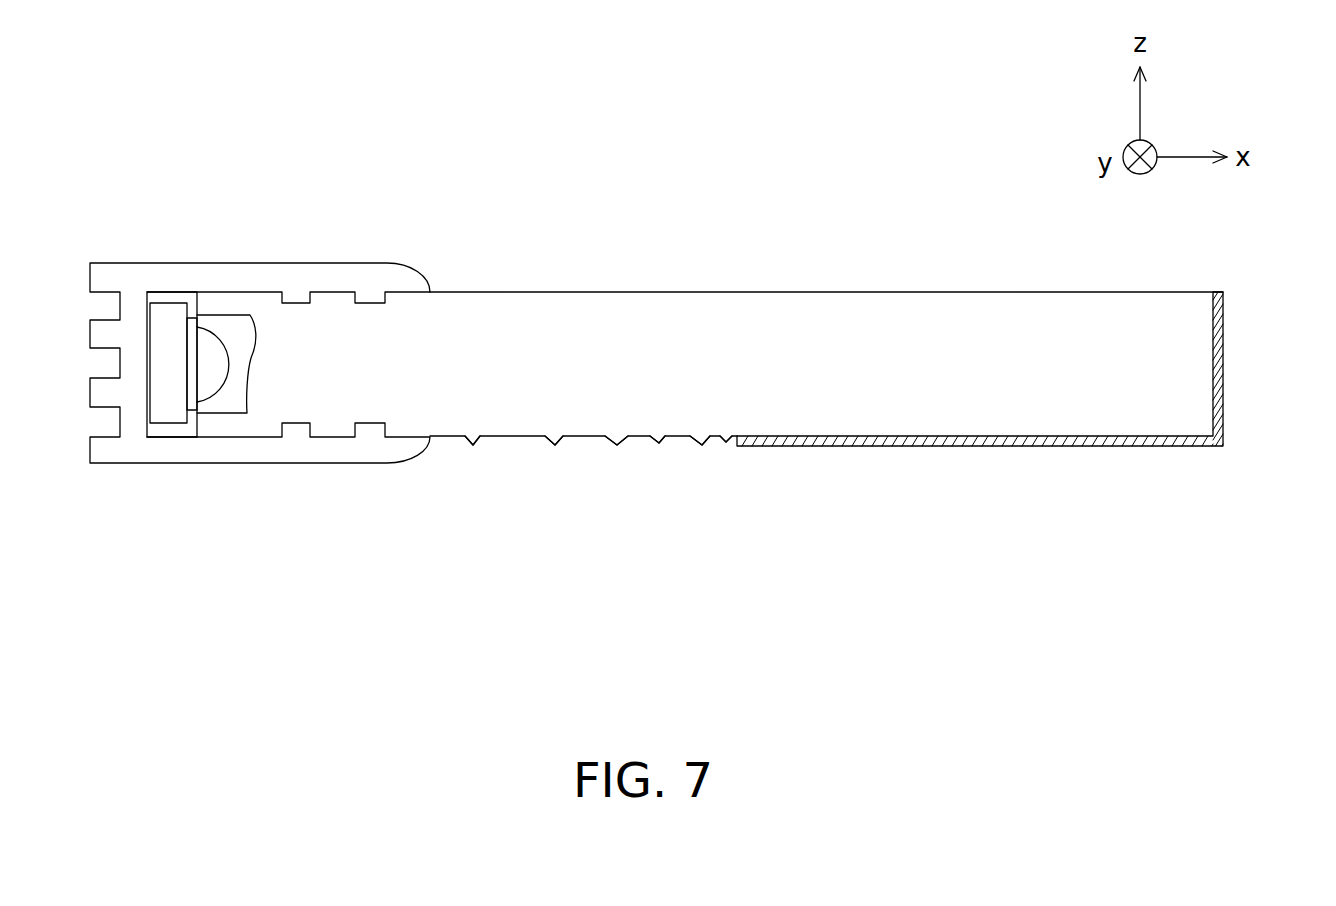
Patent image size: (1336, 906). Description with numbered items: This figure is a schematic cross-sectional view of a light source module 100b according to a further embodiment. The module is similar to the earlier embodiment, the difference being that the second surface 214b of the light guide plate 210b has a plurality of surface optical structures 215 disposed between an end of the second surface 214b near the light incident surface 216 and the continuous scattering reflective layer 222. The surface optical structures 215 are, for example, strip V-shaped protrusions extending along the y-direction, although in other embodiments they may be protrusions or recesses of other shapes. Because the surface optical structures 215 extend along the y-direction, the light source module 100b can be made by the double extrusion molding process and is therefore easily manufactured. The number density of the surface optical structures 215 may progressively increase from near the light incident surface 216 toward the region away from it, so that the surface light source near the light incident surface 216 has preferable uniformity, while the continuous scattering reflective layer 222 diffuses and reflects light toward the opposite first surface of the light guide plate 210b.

The light source module 100b is at (706, 409).
The light guide plate 210b is at (876, 423).
The second surface 214b is at (583, 438).
The surface optical structures 215 is at (469, 441).
The light incident surface 216 is at (246, 394).
The continuous scattering reflective layer 222 is at (933, 440).